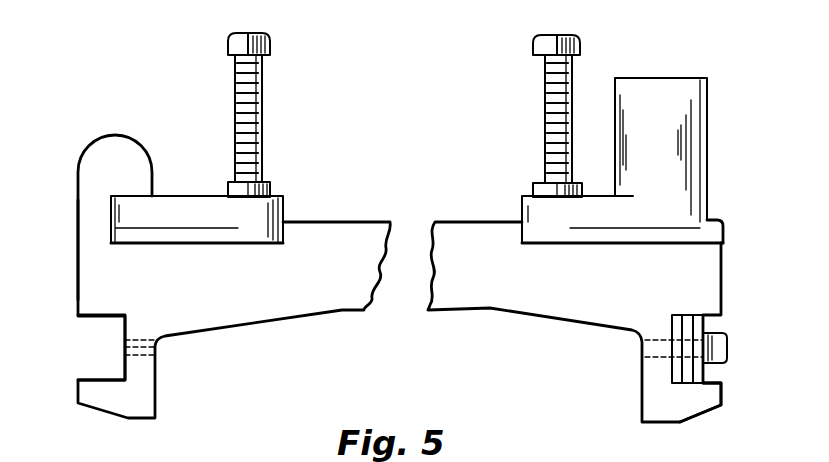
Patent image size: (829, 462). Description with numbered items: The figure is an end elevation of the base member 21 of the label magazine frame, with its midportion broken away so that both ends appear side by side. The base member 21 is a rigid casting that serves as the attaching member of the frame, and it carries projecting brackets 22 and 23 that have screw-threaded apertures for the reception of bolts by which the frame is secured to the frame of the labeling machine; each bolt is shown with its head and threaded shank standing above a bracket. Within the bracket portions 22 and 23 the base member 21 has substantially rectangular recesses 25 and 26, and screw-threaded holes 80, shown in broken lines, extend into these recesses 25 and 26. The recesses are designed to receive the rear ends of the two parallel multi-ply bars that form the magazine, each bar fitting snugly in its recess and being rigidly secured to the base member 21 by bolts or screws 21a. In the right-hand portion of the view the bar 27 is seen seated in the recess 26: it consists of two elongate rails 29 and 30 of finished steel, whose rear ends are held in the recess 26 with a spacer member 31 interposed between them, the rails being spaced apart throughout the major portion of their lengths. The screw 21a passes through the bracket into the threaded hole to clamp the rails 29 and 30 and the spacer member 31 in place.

The base member 21 is at (360, 230).
The bolts or screws 21a is at (730, 348).
The projecting bracket 22 is at (710, 273).
The projecting bracket 23 is at (90, 277).
The recess 25 is at (712, 374).
The recess 26 is at (93, 350).
The multi-ply bar 27 is at (751, 313).
The rail 29 is at (672, 327).
The rail 30 is at (705, 325).
The spacer member 31 is at (686, 322).
The screw-threaded holes 80 is at (150, 351).